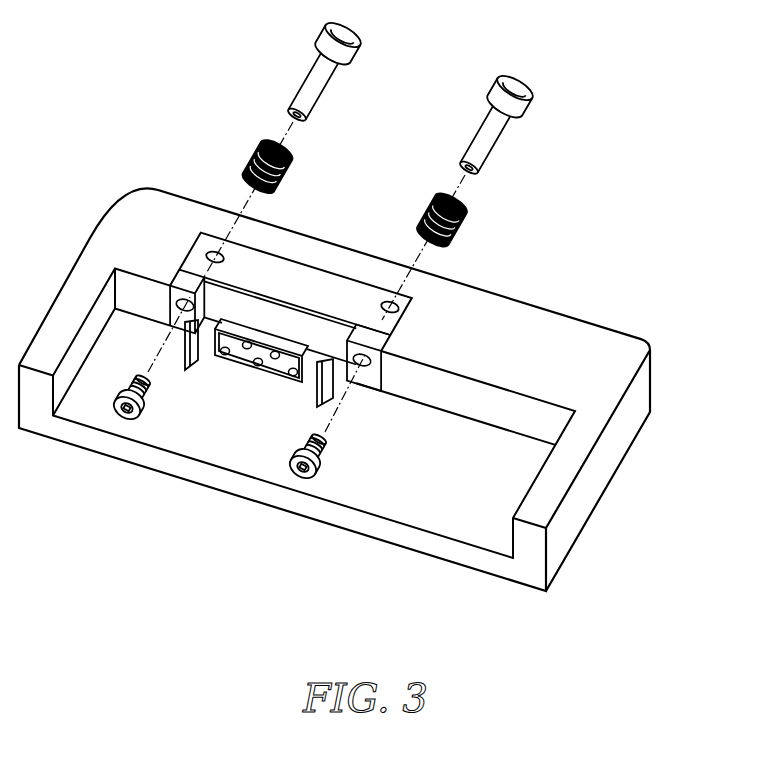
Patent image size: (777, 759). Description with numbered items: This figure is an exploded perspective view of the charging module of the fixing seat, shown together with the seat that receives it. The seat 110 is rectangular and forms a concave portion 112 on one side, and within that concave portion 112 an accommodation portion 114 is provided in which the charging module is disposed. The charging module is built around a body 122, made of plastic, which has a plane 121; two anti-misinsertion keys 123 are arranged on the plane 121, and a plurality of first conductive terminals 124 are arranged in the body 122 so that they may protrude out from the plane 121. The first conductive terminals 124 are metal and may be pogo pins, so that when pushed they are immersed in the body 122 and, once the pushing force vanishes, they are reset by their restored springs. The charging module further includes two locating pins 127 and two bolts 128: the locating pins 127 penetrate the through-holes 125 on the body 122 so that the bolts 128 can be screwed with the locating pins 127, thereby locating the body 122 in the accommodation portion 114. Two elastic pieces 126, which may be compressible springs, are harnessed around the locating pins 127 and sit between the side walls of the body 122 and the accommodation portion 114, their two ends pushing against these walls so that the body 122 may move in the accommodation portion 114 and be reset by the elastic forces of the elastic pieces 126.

The seat 110 is at (628, 423).
The concave portion 112 is at (495, 450).
The accommodation portion 114 is at (190, 263).
The plane 121 is at (192, 371).
The body 122 is at (213, 346).
The anti-misinsertion keys 123 is at (316, 405).
The first conductive terminals 124 is at (258, 366).
The through-holes 125 is at (361, 367).
The elastic pieces 126 is at (462, 223).
The locating pins 127 is at (492, 138).
The bolts 128 is at (315, 477).